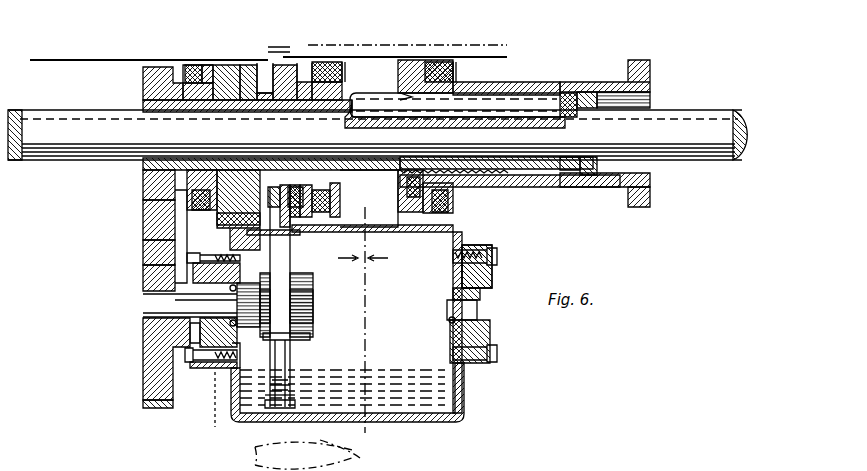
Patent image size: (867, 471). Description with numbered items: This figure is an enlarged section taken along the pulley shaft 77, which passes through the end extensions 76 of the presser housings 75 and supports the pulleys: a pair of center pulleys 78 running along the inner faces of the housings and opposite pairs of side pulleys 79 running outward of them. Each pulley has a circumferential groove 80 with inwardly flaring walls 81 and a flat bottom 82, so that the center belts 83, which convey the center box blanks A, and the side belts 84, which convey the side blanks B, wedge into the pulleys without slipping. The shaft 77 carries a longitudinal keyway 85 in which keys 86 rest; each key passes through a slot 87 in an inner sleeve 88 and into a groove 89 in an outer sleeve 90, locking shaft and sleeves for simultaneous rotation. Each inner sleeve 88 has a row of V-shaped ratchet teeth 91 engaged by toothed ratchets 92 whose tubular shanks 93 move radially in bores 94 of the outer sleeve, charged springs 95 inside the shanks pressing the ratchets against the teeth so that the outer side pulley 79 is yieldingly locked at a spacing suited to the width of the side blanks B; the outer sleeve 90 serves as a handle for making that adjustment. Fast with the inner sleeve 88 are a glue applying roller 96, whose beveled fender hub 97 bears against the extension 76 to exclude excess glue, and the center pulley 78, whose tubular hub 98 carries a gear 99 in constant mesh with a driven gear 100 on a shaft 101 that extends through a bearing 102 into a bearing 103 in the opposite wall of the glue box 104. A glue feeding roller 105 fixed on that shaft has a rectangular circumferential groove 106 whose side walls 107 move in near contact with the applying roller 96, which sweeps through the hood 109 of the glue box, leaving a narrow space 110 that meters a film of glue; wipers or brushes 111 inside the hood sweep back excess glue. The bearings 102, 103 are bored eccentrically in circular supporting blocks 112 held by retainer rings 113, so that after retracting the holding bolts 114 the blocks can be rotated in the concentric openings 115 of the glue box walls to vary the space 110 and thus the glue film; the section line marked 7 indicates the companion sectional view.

The center box blanks A is at (122, 60).
The side blanks B is at (394, 48).
The section line 7- 7 is at (371, 319).
The presser housings 75 is at (245, 72).
The end extensions 76 is at (226, 70).
The pulley shaft 77 is at (57, 162).
The center pulleys 78 is at (185, 65).
The side pulleys 79 is at (344, 67).
The circumferential grooves 80 is at (186, 80).
The inwardly flaring walls 81 is at (452, 208).
The flat bottom 82 is at (453, 82).
The center belts 83 is at (195, 65).
The side belts 84 is at (326, 62).
The keyway 85 is at (575, 110).
The keys 86 is at (548, 120).
The slots 87 is at (568, 93).
The inner sleeves 88 is at (143, 108).
The grooves 89 is at (405, 97).
The outer sleeves 90 is at (532, 93).
The ratchet teeth 91 is at (520, 170).
The toothed ratchets 92 is at (416, 175).
The tubular shanks 93 is at (398, 185).
The sockets or bores 94 is at (380, 196).
The charged springs 95 is at (412, 232).
The glue applying rollers 96 is at (293, 65).
The beveled fender hubs 97 is at (268, 62).
The tubular hubs 98 is at (143, 172).
The gears 99 is at (143, 191).
The driven gears 100 is at (150, 270).
The shafts 101 is at (150, 300).
The bearings 102 is at (198, 368).
The bearings 103 is at (490, 330).
The glue boxes 104 is at (466, 392).
The glue feeding rollers 105 is at (300, 348).
The circumferential grooves 106 is at (282, 400).
The side walls 107 is at (232, 383).
The hoods 109 is at (210, 217).
The space 110 is at (290, 258).
The wipers or brushes 111 is at (335, 180).
The circular supporting blocks 112 is at (482, 276).
The retainer rings 113 is at (470, 245).
The holding bolts 114 is at (497, 256).
The circular concentric openings 115 is at (242, 346).